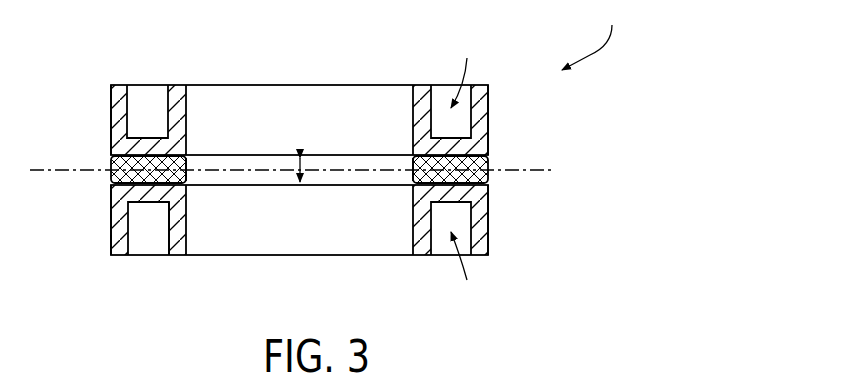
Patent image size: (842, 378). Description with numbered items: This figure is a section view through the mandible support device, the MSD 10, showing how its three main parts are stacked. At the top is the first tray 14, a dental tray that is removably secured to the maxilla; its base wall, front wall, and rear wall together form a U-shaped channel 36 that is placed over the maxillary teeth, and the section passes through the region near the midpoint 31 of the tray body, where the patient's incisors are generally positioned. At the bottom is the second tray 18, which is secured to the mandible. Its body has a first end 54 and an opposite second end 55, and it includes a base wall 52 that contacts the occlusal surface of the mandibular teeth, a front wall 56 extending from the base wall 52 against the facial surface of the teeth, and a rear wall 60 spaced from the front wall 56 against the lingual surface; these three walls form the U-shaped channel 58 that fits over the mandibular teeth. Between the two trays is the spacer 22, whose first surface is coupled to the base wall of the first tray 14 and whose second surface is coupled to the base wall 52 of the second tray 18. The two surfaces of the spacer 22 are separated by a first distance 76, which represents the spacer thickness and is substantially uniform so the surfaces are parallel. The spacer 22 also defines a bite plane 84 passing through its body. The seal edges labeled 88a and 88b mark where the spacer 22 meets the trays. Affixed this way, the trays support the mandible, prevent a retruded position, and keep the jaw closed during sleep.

The MSD 10 is at (592, 35).
The first tray 14 is at (329, 92).
The second tray 18 is at (303, 253).
The spacer 22 is at (118, 176).
The midpoint 31 is at (490, 112).
The channel 36 is at (463, 68).
The base wall 52 is at (167, 192).
The first end 54 is at (118, 245).
The second end 55 is at (490, 240).
The front wall 56 is at (120, 215).
The channel 58 is at (463, 272).
The rear wall 60 is at (177, 232).
The first distance 76 is at (305, 172).
The bite plane 84 is at (553, 165).
The seal inner edge 88a is at (182, 167).
The seal inner edge 88b is at (415, 163).